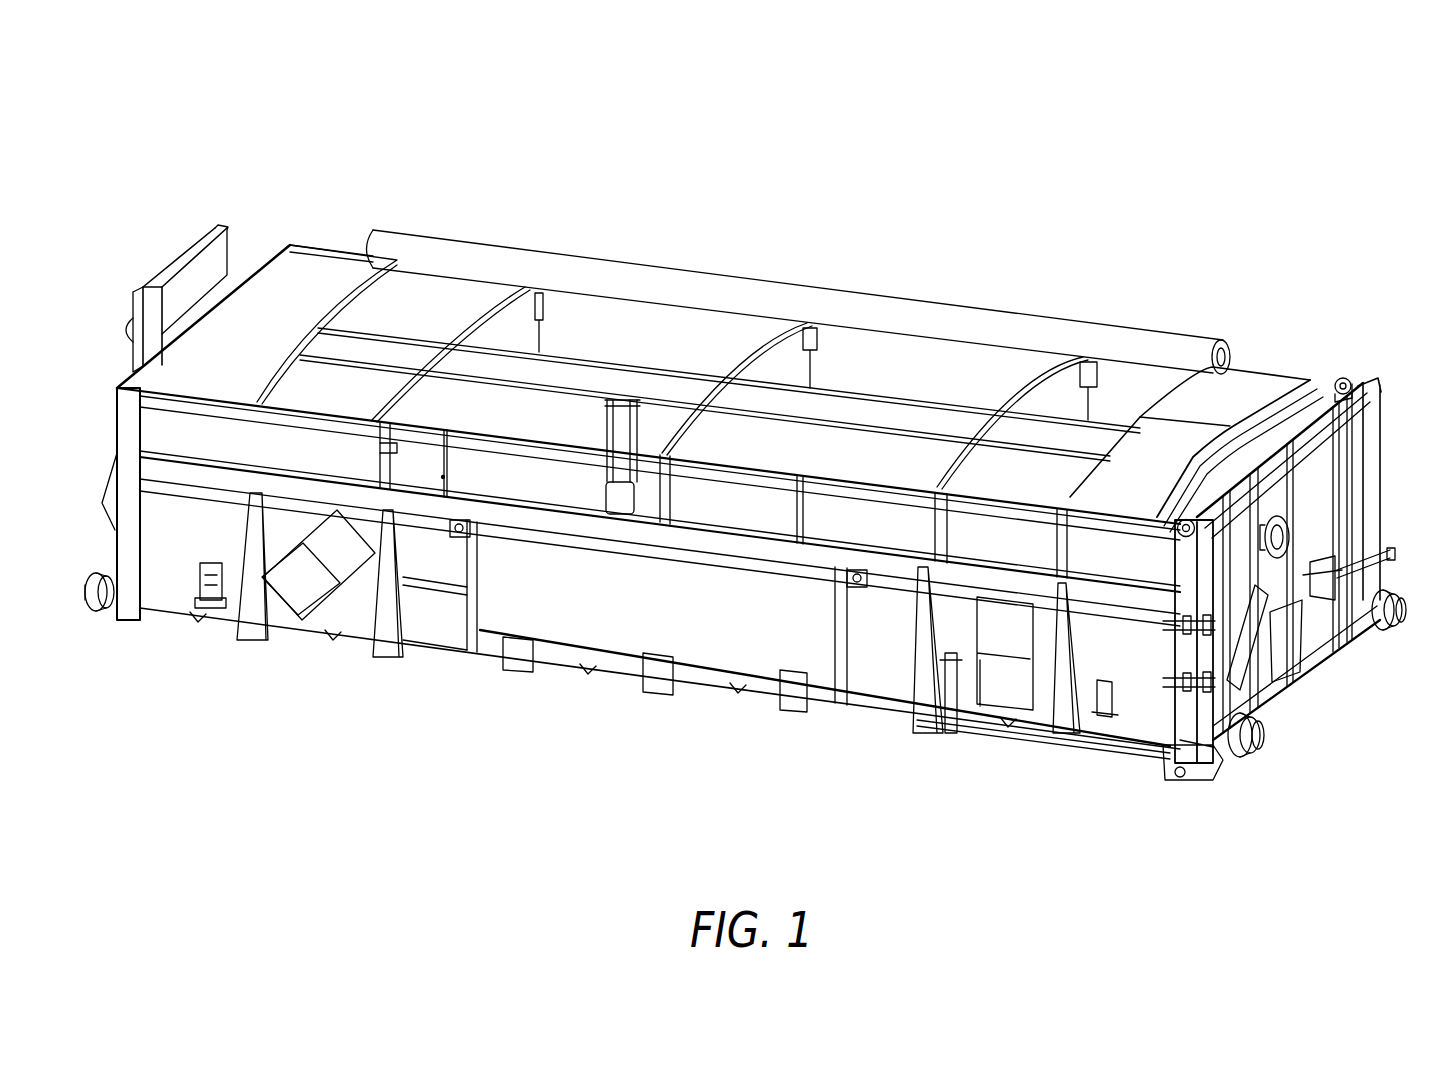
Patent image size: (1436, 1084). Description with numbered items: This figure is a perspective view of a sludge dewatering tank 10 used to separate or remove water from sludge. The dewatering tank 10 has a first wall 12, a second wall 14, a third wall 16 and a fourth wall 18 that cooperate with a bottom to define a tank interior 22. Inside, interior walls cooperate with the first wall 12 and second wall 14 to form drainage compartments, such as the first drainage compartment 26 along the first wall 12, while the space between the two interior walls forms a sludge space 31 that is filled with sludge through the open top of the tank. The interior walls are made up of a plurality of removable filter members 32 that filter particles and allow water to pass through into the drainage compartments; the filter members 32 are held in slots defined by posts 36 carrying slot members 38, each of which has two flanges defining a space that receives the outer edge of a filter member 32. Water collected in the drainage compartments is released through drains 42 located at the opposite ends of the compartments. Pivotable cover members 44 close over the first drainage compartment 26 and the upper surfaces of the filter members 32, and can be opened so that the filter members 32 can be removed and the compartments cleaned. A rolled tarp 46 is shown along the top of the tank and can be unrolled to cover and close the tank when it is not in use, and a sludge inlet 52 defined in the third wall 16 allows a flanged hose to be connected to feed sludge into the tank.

The dewatering tank 10 is at (182, 152).
The first wall 12 is at (167, 433).
The second wall 14 is at (1017, 364).
The third wall 16 is at (1310, 637).
The fourth wall 18 is at (268, 266).
The tank interior 22 is at (545, 420).
The first drainage compartment 26 is at (750, 430).
The sludge space 31 is at (360, 397).
The filter member 32 is at (866, 455).
The post 36 is at (620, 440).
The slot member 38 is at (623, 502).
The drain 42 is at (105, 612).
The cover member 44 is at (513, 362).
The tarp 46 is at (1177, 333).
The sludge inlet 52 is at (1284, 533).